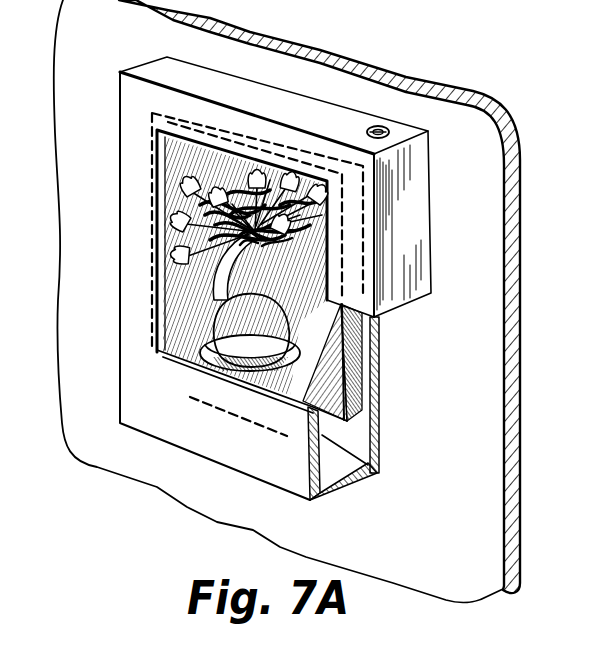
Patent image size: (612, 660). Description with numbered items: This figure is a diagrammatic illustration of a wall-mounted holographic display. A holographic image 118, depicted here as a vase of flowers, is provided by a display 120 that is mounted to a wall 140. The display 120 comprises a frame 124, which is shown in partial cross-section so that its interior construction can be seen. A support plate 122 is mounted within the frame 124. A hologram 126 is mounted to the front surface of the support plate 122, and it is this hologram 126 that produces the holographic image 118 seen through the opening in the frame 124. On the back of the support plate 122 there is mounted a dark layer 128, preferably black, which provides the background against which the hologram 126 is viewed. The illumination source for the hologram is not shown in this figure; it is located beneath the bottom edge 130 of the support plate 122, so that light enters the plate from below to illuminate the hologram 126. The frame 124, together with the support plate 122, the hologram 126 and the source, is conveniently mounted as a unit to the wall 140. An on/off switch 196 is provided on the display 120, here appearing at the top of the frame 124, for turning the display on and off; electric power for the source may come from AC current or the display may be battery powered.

The holographic image 118 is at (225, 352).
The display 120 is at (338, 88).
The support plate 122 is at (357, 363).
The frame 124 is at (413, 208).
The hologram 126 is at (297, 385).
The dark layer 128 is at (352, 323).
The bottom edge 130 is at (330, 427).
The wall 140 is at (421, 540).
The on/off switch 196 is at (385, 126).